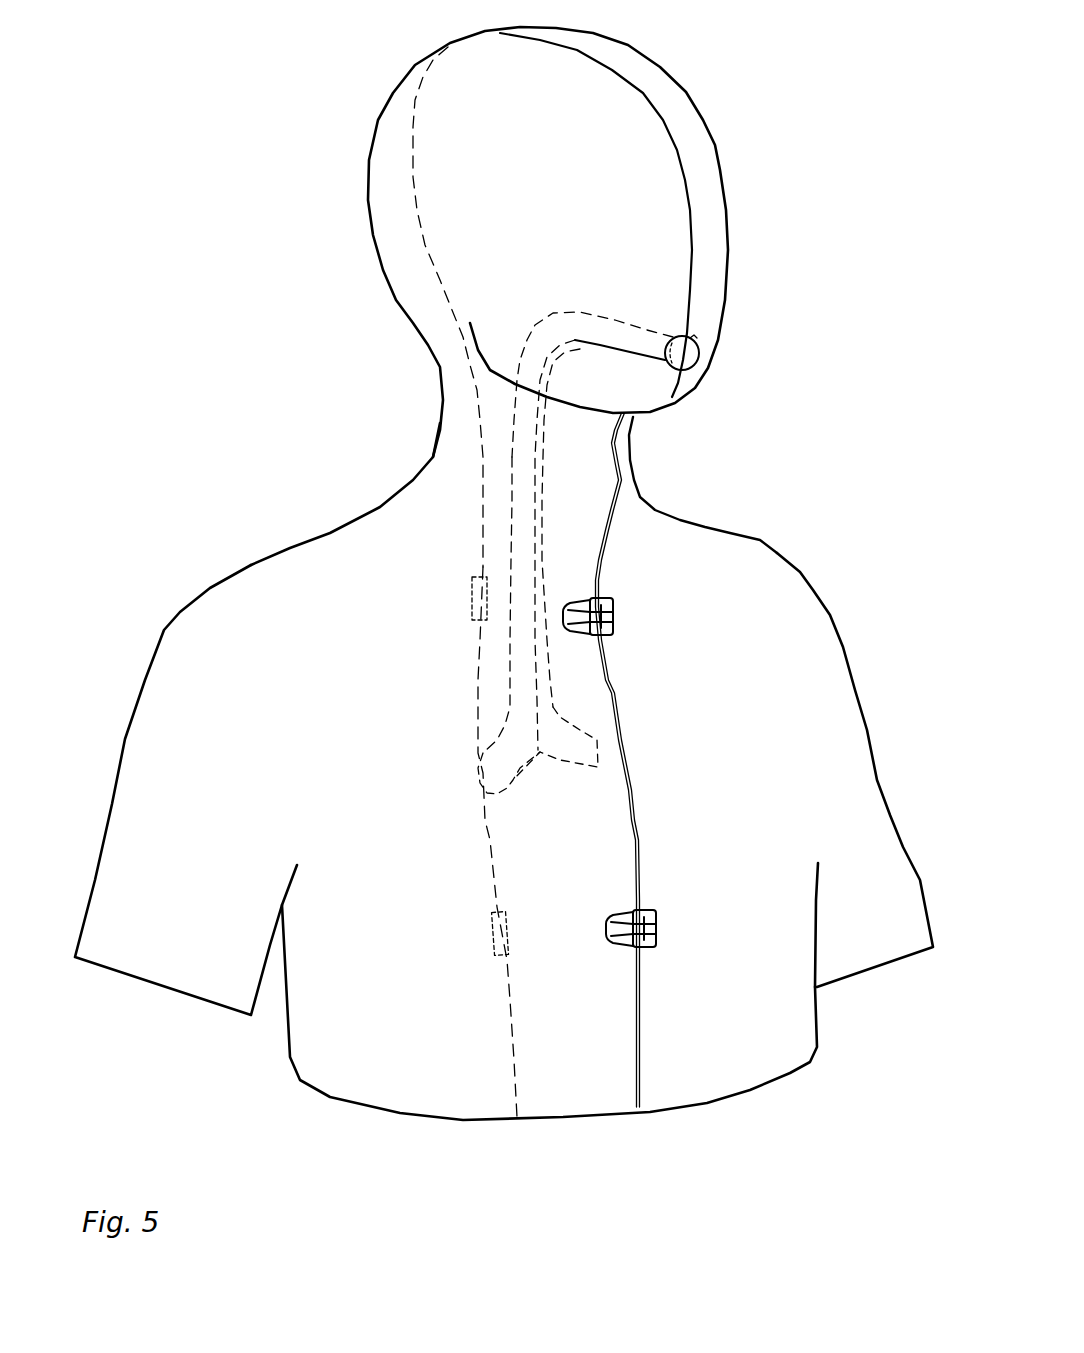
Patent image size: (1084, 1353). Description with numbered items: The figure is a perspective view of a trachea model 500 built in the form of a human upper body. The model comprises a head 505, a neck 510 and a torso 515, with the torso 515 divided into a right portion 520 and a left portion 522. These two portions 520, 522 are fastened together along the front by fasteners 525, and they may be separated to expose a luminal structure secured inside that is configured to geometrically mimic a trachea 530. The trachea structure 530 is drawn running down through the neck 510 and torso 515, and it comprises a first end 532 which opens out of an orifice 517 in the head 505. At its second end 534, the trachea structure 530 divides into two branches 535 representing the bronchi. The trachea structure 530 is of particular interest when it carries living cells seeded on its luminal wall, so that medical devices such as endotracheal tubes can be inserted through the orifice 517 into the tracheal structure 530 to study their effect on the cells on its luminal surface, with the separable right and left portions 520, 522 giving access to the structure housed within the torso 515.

The trachea model 500 is at (200, 101).
The head 505 is at (593, 80).
The neck 510 is at (458, 447).
The torso 515 is at (555, 1105).
The orifice 517 is at (690, 353).
The right portion 520 is at (375, 643).
The left portion 522 is at (777, 620).
The fasteners 525 is at (615, 607).
The trachea structure 530 is at (535, 455).
The first end 532 is at (650, 327).
The second end 534 is at (512, 683).
The branches 535 is at (495, 780).